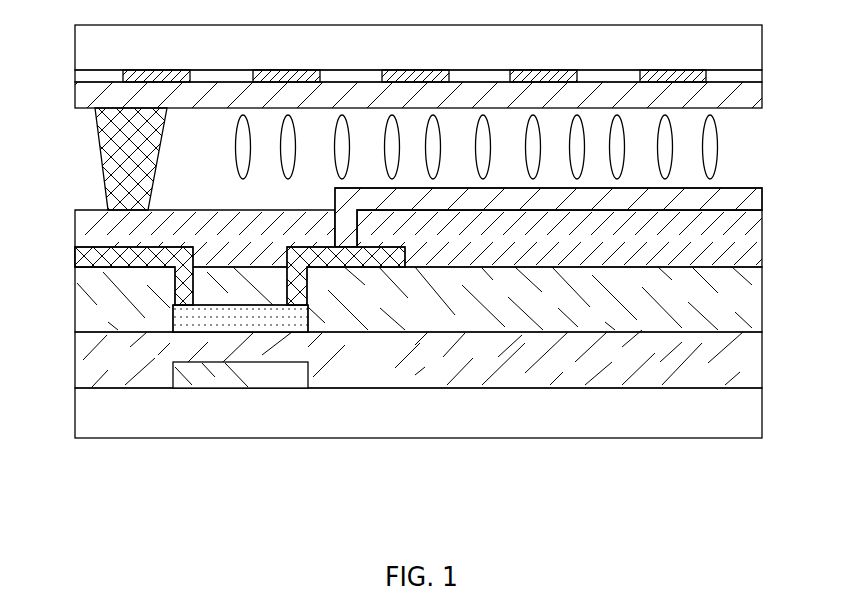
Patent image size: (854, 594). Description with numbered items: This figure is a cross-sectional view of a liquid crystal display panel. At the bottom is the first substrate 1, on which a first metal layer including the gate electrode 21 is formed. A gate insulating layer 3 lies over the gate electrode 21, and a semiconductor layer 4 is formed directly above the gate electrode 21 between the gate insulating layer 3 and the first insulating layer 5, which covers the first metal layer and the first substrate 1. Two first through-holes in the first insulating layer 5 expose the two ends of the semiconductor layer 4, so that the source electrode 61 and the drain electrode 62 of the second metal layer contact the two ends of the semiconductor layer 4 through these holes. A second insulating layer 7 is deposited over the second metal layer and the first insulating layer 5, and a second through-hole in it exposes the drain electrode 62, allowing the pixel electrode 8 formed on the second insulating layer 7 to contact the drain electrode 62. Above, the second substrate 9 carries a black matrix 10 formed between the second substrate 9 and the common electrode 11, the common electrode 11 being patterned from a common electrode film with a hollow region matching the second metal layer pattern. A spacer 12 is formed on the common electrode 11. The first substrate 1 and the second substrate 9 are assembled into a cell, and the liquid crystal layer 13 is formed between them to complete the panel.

The first substrate 1 is at (705, 420).
The gate insulating layer 3 is at (708, 362).
The semiconductor layer 4 is at (224, 333).
The first insulating layer 5 is at (710, 300).
The source electrode 61 is at (104, 258).
The drain electrode 62 is at (347, 250).
The second insulating layer 7 is at (700, 242).
The pixel electrode 8 is at (723, 198).
The second substrate 9 is at (713, 40).
The black matrix 10 is at (695, 80).
The common electrode 11 is at (720, 102).
The spacer 12 is at (147, 148).
The liquid crystal layer 13 is at (717, 155).
The gate electrode 21 is at (262, 362).